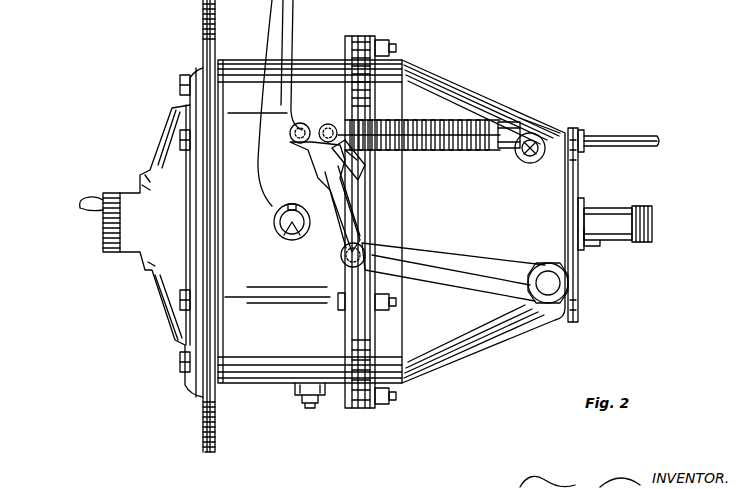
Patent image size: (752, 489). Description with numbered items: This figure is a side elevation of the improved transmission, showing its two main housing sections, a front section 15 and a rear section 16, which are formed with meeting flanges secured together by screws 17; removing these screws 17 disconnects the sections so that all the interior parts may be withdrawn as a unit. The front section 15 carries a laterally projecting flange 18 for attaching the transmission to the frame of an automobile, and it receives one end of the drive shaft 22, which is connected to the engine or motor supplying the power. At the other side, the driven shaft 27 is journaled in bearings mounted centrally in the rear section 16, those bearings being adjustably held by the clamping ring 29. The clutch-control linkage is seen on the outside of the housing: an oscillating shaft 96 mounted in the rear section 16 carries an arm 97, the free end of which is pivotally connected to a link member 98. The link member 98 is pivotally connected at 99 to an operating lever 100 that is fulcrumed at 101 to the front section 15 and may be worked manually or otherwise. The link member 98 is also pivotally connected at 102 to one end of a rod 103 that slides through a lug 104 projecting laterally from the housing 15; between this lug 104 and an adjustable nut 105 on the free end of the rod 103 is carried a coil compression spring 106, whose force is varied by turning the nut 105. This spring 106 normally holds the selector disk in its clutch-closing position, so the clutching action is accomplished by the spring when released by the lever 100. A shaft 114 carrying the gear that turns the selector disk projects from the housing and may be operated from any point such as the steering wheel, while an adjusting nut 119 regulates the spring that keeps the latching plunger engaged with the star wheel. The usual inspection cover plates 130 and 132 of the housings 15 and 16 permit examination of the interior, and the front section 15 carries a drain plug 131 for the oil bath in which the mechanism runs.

The front housing section 15 is at (230, 108).
The rear housing section 16 is at (450, 356).
The screws 17 is at (385, 406).
The laterally projecting flange 18 is at (207, 450).
The drive shaft 22 is at (103, 228).
The driven shaft 27 is at (610, 240).
The clamping ring 29 is at (590, 203).
The oscillating shaft 96 is at (549, 292).
The arm 97 is at (476, 258).
The link member 98 is at (340, 222).
The pivot connection 99 is at (302, 128).
The operating lever 100 is at (272, 47).
The fulcrum 101 is at (290, 224).
The pivot connection 102 is at (335, 130).
The rod 103 is at (527, 132).
The lug 104 is at (365, 158).
The adjustable nut 105 is at (510, 124).
The coil compression spring 106 is at (446, 118).
The shaft 114 is at (645, 136).
The adjusting nut 119 is at (562, 140).
The cover plate 130 is at (330, 55).
The drain plug 131 is at (310, 410).
The cover plate 132 is at (545, 112).